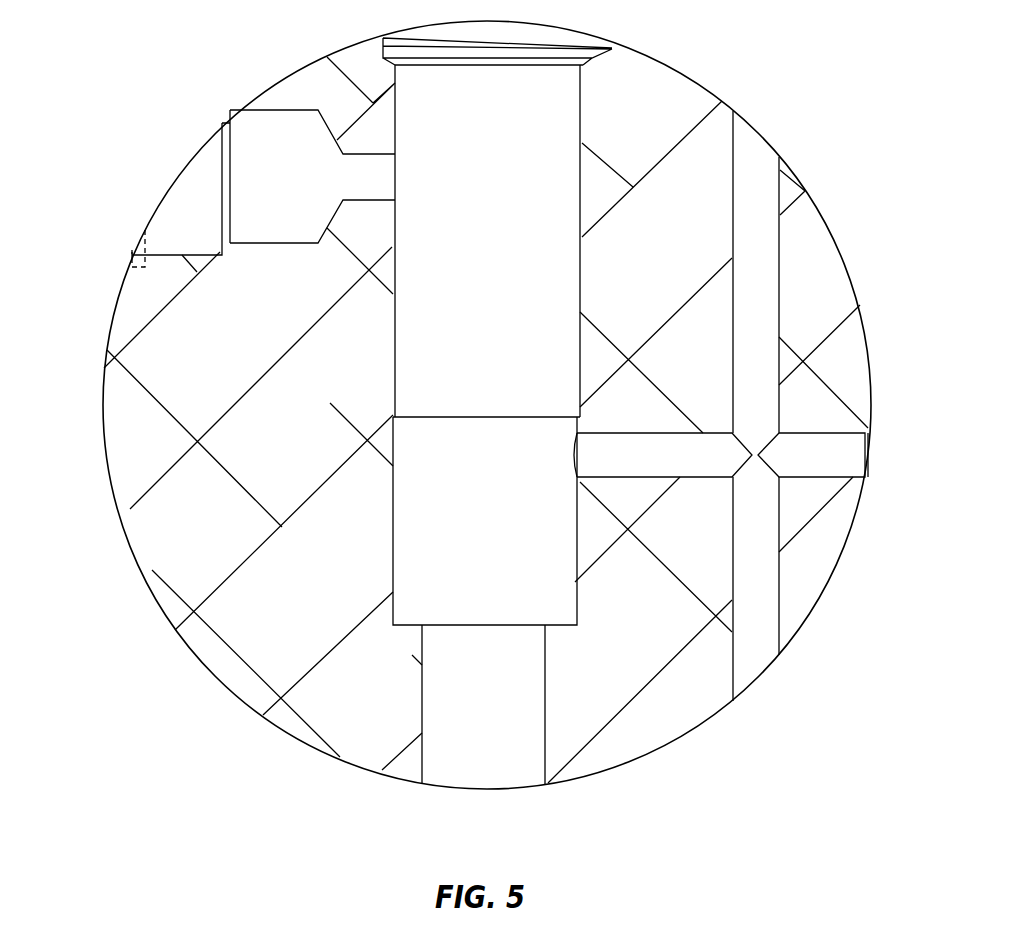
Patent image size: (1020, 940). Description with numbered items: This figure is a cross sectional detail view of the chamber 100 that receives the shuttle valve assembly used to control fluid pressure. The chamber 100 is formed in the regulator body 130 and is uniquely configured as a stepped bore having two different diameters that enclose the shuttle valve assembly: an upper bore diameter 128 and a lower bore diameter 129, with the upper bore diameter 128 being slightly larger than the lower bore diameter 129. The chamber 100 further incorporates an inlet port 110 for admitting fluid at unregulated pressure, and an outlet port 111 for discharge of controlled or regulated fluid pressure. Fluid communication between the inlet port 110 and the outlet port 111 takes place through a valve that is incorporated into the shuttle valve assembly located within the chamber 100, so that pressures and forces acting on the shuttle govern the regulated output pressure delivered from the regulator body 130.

The chamber 100 is at (393, 370).
The inlet port 110 is at (753, 652).
The outlet port 111 is at (185, 207).
The upper bore diameter 128 is at (580, 313).
The lower bore diameter 129 is at (577, 540).
The regulator body 130 is at (688, 255).